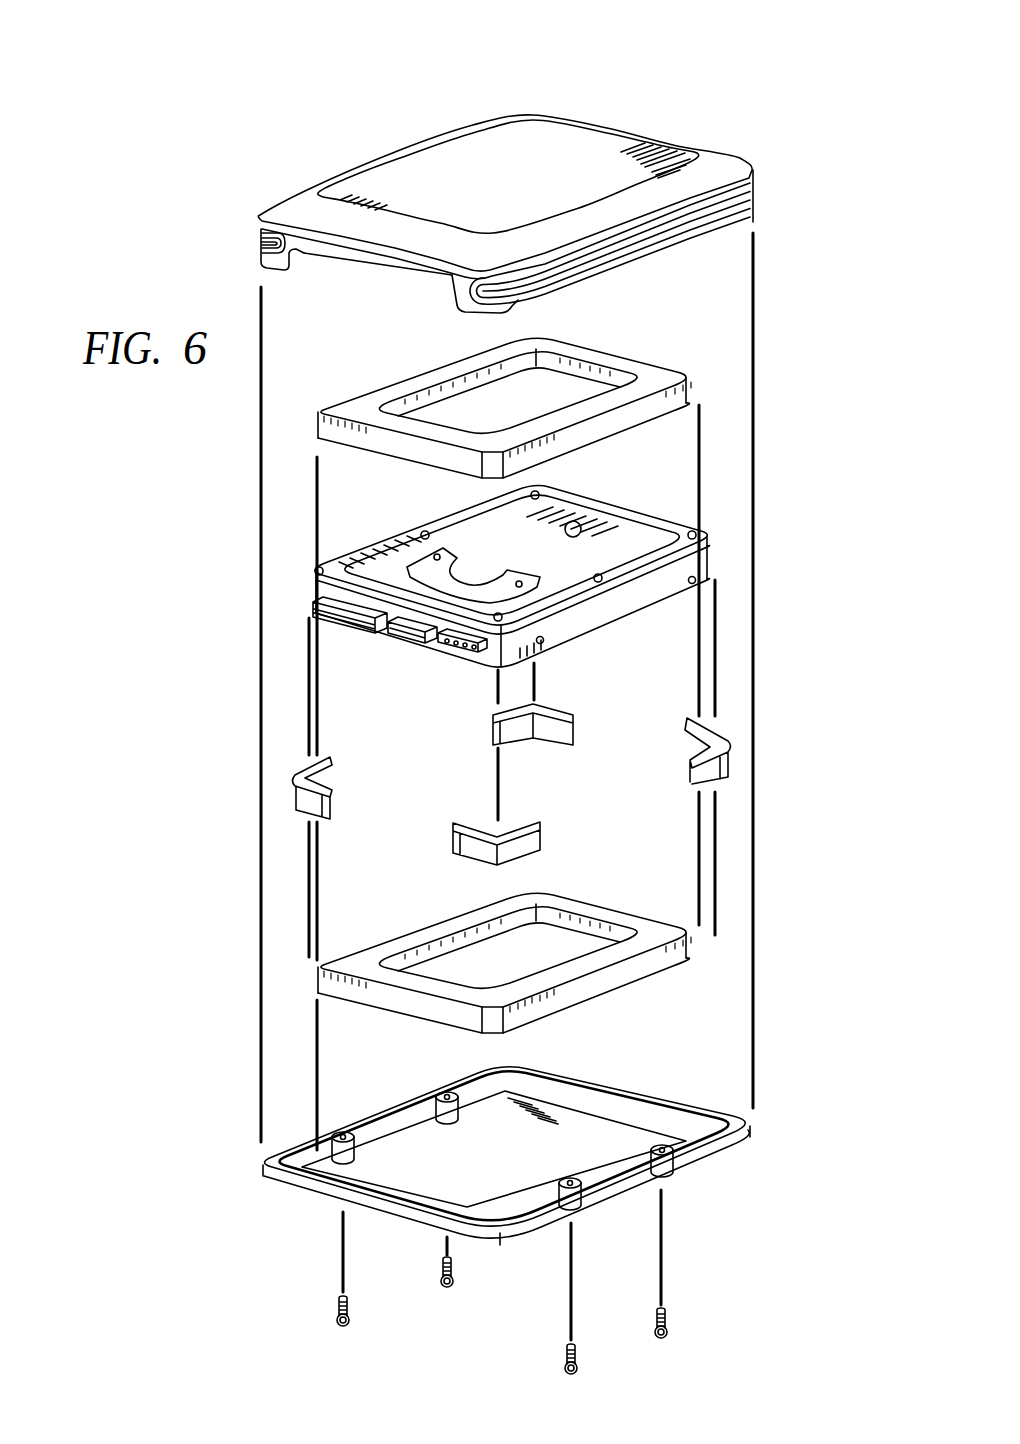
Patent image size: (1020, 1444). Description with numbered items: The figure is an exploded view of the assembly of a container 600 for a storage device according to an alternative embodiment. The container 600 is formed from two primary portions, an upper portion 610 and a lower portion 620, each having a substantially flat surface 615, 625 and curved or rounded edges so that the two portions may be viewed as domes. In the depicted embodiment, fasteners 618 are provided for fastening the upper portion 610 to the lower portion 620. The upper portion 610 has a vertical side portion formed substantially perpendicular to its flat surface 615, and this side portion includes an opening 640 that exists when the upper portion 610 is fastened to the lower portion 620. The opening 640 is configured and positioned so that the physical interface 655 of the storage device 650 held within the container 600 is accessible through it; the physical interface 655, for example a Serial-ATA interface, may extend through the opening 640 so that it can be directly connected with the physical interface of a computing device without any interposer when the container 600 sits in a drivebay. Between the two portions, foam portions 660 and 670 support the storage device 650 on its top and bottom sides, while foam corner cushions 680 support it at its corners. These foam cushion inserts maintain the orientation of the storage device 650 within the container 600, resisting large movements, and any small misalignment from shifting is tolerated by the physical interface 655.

The container 600 is at (399, 98).
The upper portion 610 is at (730, 166).
The flat surface 615 is at (580, 130).
The opening 640 is at (366, 280).
The foam portion 660 is at (638, 362).
The storage device 650 is at (643, 520).
The physical interface 655 is at (405, 643).
The foam corner cushions 680 is at (330, 802).
The foam portion 670 is at (638, 918).
The lower portion 620 is at (693, 1163).
The flat surface 625 is at (615, 1133).
The fasteners 618 is at (667, 1325).